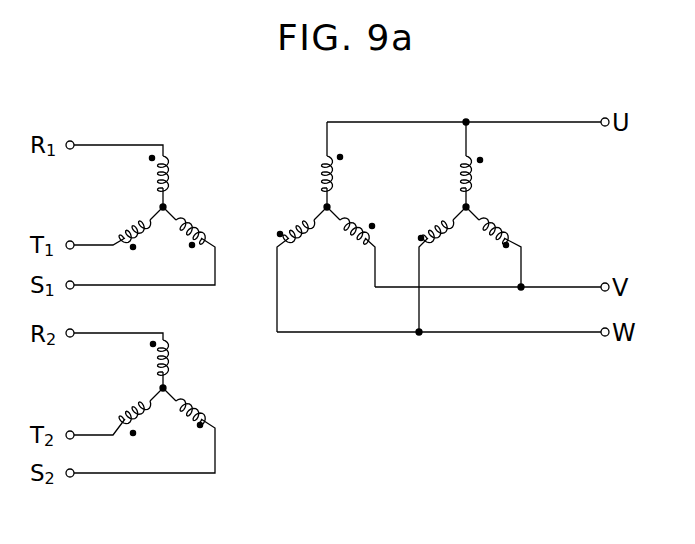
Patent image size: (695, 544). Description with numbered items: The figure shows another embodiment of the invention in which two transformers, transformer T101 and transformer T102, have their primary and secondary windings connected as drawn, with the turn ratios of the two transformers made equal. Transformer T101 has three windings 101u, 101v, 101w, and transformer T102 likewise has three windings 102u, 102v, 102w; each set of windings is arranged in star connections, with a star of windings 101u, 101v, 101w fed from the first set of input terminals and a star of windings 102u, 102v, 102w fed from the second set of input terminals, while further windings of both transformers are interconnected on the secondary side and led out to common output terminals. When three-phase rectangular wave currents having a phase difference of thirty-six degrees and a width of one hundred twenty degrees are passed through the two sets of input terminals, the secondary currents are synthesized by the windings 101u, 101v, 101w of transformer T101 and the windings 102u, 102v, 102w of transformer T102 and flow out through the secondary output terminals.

The transformer T101 is at (310, 193).
The transformer T102 is at (452, 240).
The winding of transformer T101 101u is at (171, 166).
The winding of transformer T101 101v is at (191, 224).
The winding of transformer T101 101w is at (132, 232).
The winding of transformer T102 102u is at (475, 170).
The winding of transformer T102 102v is at (490, 224).
The winding of transformer T102 102w is at (455, 236).